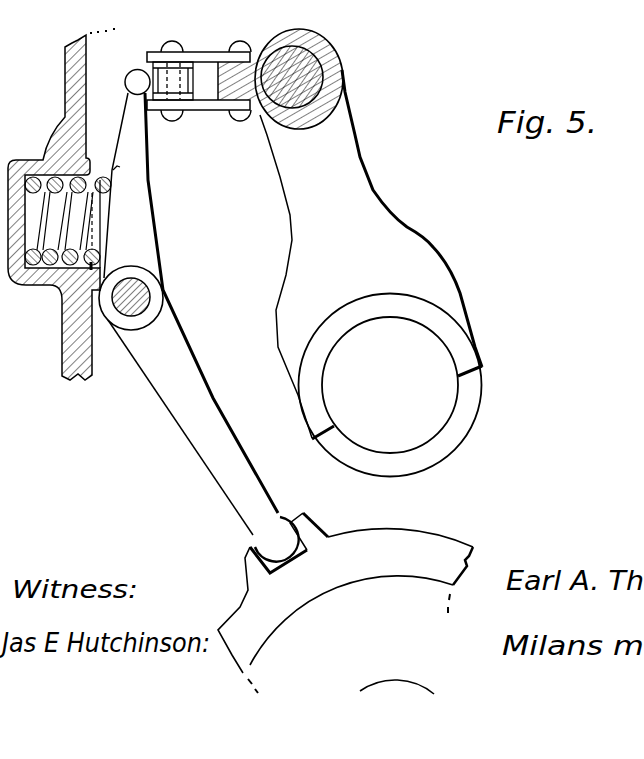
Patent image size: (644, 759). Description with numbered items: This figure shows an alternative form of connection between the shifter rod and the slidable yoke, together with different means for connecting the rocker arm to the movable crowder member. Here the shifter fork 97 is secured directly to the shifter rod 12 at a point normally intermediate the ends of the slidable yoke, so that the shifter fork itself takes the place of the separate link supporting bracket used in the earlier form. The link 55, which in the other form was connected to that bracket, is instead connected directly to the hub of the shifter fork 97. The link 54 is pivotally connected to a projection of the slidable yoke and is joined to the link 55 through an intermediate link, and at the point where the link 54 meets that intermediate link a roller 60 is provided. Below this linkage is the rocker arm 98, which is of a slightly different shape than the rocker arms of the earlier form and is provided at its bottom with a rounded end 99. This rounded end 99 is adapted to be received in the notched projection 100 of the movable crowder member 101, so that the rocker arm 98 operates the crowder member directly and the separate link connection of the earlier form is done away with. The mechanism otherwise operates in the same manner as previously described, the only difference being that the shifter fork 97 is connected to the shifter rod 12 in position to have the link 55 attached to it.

The shifter rod 12 is at (313, 78).
The link 54 is at (213, 110).
The link 55 is at (222, 41).
The roller 60 is at (160, 88).
The shifter fork 97 is at (340, 125).
The rocker arm 98 is at (150, 214).
The rounded end 99 is at (272, 542).
The notched projection 100 is at (330, 538).
The movable crowder member 101 is at (452, 547).